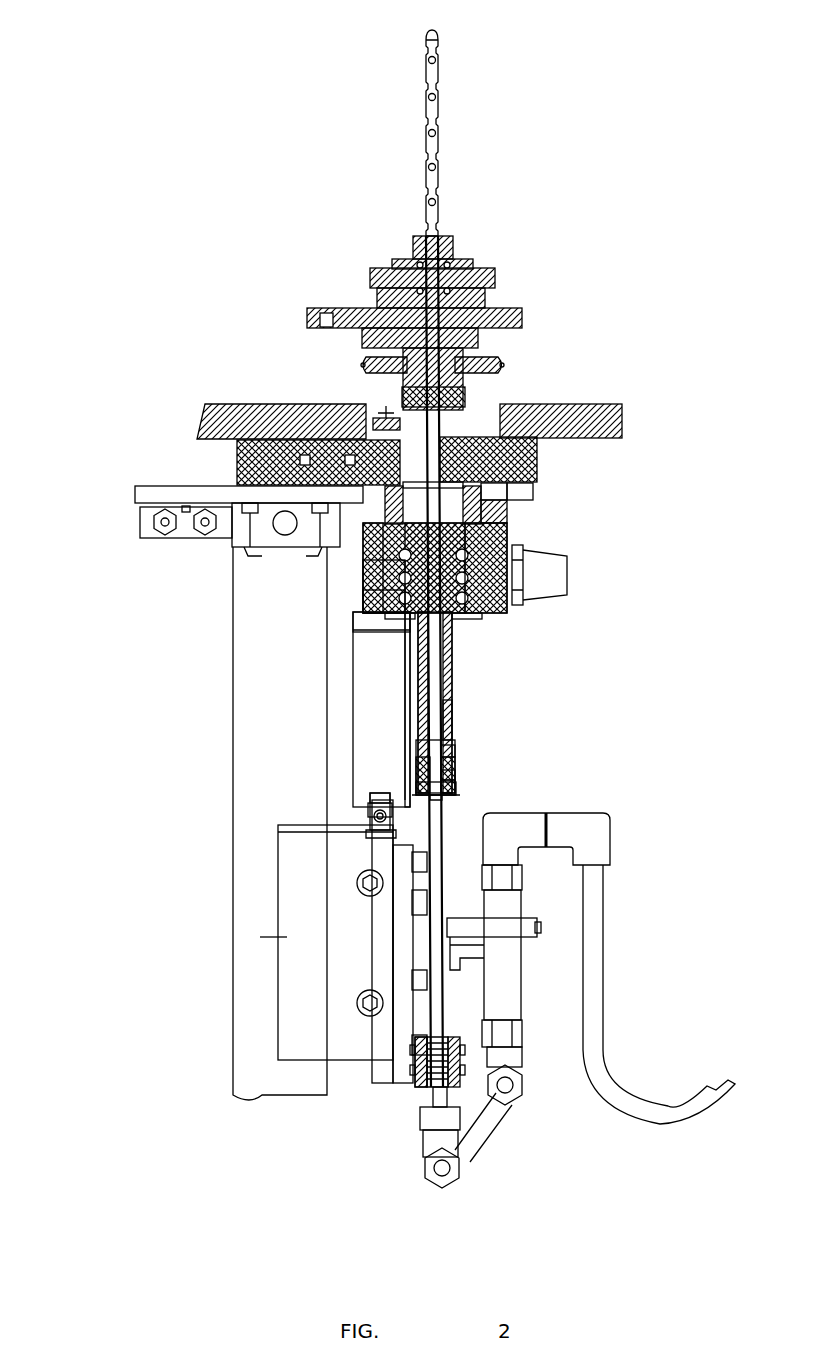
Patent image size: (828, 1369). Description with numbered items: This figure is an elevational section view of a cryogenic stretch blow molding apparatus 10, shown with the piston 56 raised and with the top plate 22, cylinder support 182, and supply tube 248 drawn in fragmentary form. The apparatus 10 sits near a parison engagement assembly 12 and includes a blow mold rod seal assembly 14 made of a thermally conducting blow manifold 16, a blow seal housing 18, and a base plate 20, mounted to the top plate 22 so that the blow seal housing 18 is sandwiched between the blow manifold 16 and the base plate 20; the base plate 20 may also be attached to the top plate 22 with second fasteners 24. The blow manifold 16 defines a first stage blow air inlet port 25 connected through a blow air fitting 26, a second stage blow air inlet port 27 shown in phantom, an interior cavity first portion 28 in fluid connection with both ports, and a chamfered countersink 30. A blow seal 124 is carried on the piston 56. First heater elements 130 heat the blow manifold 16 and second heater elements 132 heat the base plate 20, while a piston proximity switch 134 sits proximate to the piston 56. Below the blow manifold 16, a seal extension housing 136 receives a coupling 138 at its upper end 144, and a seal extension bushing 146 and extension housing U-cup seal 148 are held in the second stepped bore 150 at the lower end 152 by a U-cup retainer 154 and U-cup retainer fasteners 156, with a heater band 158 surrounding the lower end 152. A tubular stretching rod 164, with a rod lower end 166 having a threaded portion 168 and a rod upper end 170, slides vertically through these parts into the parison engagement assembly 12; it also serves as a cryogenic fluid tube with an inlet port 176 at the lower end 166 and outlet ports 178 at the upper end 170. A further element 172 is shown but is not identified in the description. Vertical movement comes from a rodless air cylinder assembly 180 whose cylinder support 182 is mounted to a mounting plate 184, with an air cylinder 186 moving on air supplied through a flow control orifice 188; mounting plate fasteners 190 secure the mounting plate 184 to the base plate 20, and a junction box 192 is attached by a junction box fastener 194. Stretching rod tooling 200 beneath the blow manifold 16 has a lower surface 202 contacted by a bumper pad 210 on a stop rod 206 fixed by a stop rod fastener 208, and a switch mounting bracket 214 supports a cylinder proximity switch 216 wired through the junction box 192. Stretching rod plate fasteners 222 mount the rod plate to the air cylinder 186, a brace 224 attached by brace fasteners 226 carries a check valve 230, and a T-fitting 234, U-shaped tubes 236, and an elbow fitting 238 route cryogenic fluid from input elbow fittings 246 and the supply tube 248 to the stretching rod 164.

The apparatus 10 is at (140, 355).
The parison engagement assembly 12 is at (522, 308).
The blow mold rod seal assembly 14 is at (645, 450).
The blow manifold 16 is at (505, 618).
The blow seal housing 18 is at (508, 514).
The base plate 20 is at (237, 458).
The top plate 22 is at (220, 404).
The second fasteners 24 is at (525, 493).
The first stage blow air inlet port 25 is at (540, 547).
The blow air fitting 26 is at (567, 577).
The second stage blow air inlet port 27 is at (368, 600).
The interior cavity first portion 28 is at (365, 585).
The chamfered countersink 30 is at (365, 570).
The piston 56 is at (500, 506).
The blow seal 124 is at (500, 378).
The first heater elements 130 is at (507, 537).
The second heater elements 132 is at (545, 466).
The piston proximity switch 134 is at (378, 418).
The seal extension housing 136 is at (452, 682).
The coupling 138 is at (457, 630).
The seal extension housing upper end 144 is at (453, 660).
The seal extension bushing 146 is at (575, 736).
The extension housing U-cup seal 148 is at (452, 718).
The seal extension housing second stepped bore 150 is at (456, 762).
The seal extension housing lower end 152 is at (455, 738).
The U-cup retainer 154 is at (455, 780).
The U-cup retainer fasteners 156 is at (452, 796).
The heater band 158 is at (455, 760).
The tubular stretching rod 164 is at (512, 818).
The rod lower end 166 is at (430, 1092).
The threaded portion 168 is at (420, 1088).
The rod upper end 170 is at (440, 36).
The rod shaft 172 is at (434, 661).
The cryogenic fluid inlet port 176 is at (437, 1096).
The cryogenic fluid outlet ports 178 is at (437, 152).
The rodless air cylinder assembly 180 is at (235, 1012).
The cylinder support 182 is at (240, 861).
The mounting plate 184 is at (135, 494).
The air cylinder 186 is at (283, 935).
The flow control orifice 188 is at (292, 503).
The mounting plate fasteners 190 is at (250, 549).
The junction box 192 is at (148, 535).
The junction box fastener 194 is at (186, 506).
The stretching rod tooling 200 is at (352, 742).
The stretching rod tooling lower surface 202 is at (373, 793).
The stop rod 206 is at (370, 827).
The stop rod fastener 208 is at (372, 850).
The stretching rod bumper pad 210 is at (365, 810).
The stretching rod switch mounting bracket 214 is at (362, 797).
The cylinder proximity switch 216 is at (375, 807).
The stretching rod plate fasteners 222 is at (485, 1010).
The brace 224 is at (525, 923).
The brace fasteners 226 is at (542, 928).
The check valve 230 is at (510, 990).
The T-fitting 234 is at (513, 1055).
The U-shaped tubes 236 is at (480, 1120).
The elbow fitting 238 is at (428, 1142).
The input elbow fittings 246 is at (590, 822).
The supply tube 248 is at (653, 1107).